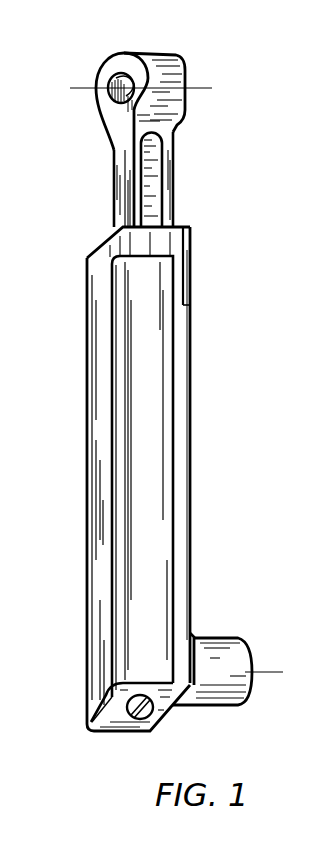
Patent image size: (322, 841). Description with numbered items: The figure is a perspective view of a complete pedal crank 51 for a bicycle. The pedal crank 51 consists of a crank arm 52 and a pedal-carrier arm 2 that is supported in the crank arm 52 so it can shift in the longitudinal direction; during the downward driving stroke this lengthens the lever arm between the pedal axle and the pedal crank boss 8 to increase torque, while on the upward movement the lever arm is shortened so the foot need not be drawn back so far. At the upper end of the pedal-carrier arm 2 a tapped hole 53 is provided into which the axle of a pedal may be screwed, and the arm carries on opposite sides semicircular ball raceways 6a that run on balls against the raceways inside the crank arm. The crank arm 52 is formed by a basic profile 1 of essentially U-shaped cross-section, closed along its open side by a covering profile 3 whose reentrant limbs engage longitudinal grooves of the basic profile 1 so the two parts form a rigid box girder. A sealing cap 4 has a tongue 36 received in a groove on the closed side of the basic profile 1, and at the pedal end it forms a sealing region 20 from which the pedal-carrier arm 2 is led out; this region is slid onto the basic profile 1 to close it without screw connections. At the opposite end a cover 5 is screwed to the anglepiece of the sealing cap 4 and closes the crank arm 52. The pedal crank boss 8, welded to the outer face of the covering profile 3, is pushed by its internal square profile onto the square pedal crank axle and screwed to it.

The basic profile 1 is at (157, 445).
The pedal-carrier arm 2 is at (184, 121).
The covering profile 3 is at (183, 528).
The sealing cap 4 is at (82, 438).
The cover 5 is at (123, 722).
The semicircular ball raceways 6a is at (156, 162).
The pedal crank boss 8 is at (223, 702).
The sealing region 20 is at (170, 241).
The tongue 36 is at (98, 536).
The pedal crank 51 is at (191, 58).
The crank arm 52 is at (154, 318).
The tapped hole 53 is at (112, 82).